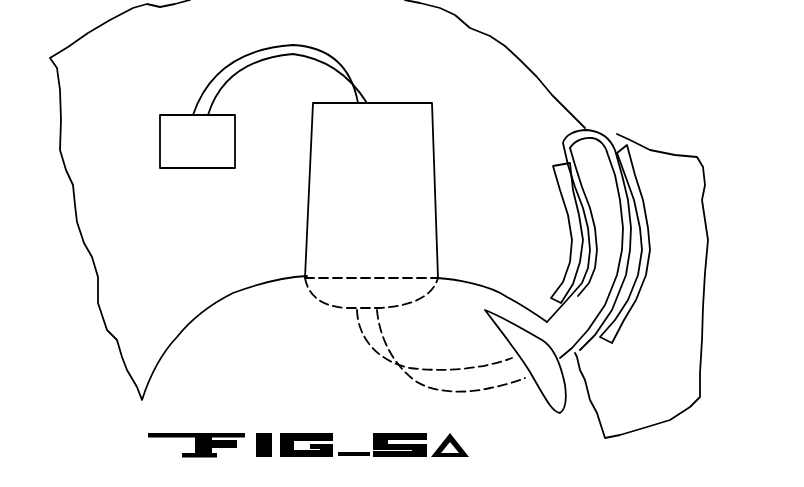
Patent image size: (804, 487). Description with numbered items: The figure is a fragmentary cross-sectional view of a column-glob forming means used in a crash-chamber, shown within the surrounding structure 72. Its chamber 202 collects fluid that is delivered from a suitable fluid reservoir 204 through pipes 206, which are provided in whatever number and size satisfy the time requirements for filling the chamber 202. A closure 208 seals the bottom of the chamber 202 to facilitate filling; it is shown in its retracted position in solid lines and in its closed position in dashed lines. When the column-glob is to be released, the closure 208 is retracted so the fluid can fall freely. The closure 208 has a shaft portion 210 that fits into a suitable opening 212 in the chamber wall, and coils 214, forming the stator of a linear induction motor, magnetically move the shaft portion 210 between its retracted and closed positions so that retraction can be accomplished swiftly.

The housing body 72 is at (565, 53).
The chamber 202 is at (400, 108).
The fluid reservoir 204 is at (168, 139).
The pipes 206 is at (296, 45).
The closure 208 is at (315, 297).
The shaft portion 210 is at (595, 160).
The opening 212 is at (570, 156).
The coils 214 is at (577, 220).